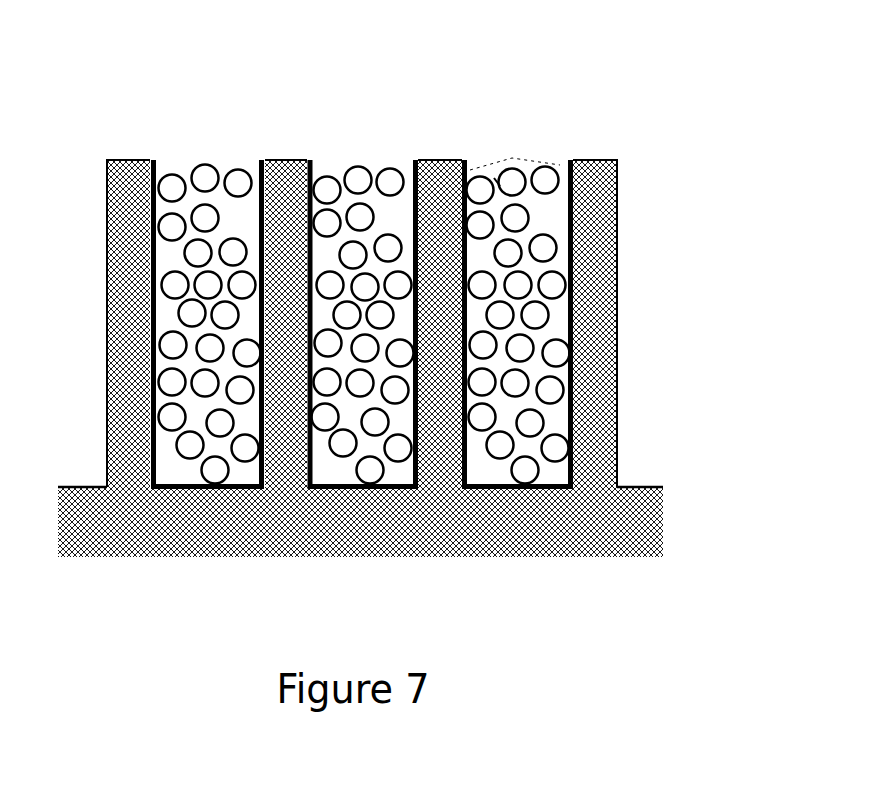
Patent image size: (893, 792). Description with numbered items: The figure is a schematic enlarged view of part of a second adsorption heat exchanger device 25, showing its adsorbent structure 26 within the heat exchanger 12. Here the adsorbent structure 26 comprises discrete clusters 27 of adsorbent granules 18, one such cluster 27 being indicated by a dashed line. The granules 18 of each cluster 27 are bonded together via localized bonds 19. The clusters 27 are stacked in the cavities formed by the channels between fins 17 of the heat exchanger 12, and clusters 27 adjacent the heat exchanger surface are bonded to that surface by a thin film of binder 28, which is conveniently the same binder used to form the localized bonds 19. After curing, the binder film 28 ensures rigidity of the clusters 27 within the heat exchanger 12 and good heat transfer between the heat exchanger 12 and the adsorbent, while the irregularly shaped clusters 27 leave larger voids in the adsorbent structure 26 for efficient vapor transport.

The heat exchanger 12 is at (657, 530).
The fins 17 is at (127, 328).
The adsorbent granules 18 is at (510, 183).
The localized bonds 19 is at (500, 183).
The adsorption heat exchanger device 25 is at (743, 118).
The adsorbent structure 26 is at (487, 288).
The clusters 27 is at (512, 158).
The thin film of binder 28 is at (572, 318).